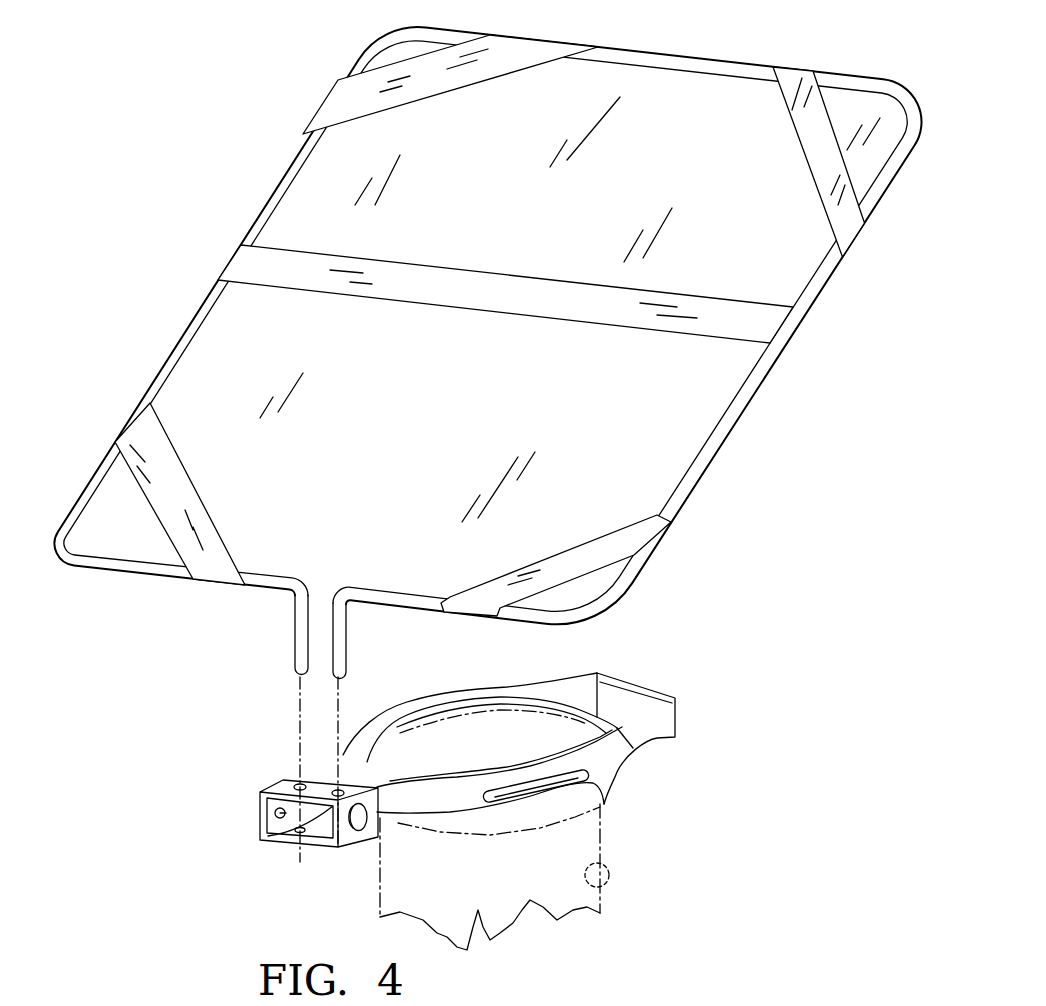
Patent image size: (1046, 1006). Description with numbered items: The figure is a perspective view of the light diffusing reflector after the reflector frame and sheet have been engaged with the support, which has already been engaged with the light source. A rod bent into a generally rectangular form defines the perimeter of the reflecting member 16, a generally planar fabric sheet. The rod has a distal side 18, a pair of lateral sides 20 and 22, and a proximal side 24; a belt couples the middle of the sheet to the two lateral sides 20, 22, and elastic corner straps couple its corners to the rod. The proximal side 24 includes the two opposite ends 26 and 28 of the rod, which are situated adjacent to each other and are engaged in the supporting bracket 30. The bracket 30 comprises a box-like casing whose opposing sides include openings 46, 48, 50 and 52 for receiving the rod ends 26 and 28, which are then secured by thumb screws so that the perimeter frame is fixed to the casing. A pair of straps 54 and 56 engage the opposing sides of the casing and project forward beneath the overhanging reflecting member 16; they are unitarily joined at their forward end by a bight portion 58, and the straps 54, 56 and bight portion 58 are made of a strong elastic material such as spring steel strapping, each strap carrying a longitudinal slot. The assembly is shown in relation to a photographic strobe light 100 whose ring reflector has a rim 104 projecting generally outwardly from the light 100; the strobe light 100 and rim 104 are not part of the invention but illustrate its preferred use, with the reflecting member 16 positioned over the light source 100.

The reflecting member 16 is at (676, 430).
The distal side 18 is at (683, 62).
The lateral side 20 is at (207, 302).
The lateral side 22 is at (807, 297).
The proximal side 24 is at (92, 568).
The end of rod 26 is at (345, 662).
The end of rod 28 is at (301, 622).
The supporting bracket 30 is at (145, 865).
The opening 46 is at (300, 786).
The opening 48 is at (350, 780).
The opening 50 is at (293, 845).
The opening 52 is at (337, 848).
The strap 54 is at (562, 698).
The strap 56 is at (477, 803).
The bight portion 58 is at (625, 698).
The photographic strobe light 100 is at (578, 853).
The rim 104 is at (607, 797).